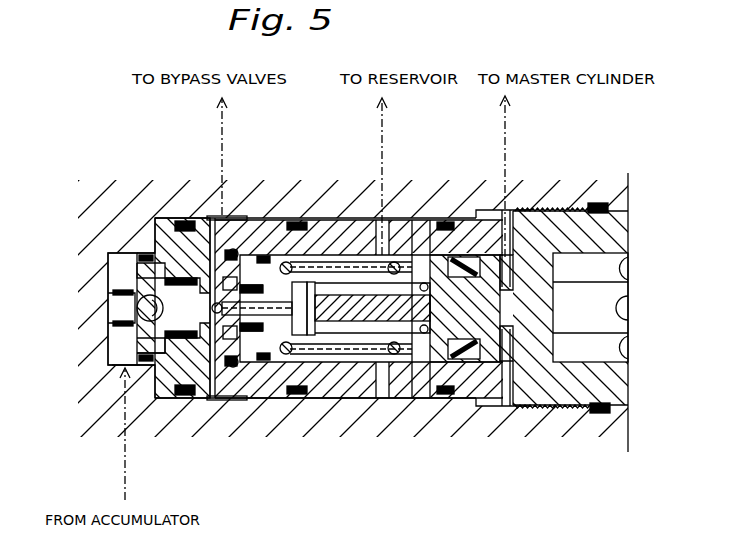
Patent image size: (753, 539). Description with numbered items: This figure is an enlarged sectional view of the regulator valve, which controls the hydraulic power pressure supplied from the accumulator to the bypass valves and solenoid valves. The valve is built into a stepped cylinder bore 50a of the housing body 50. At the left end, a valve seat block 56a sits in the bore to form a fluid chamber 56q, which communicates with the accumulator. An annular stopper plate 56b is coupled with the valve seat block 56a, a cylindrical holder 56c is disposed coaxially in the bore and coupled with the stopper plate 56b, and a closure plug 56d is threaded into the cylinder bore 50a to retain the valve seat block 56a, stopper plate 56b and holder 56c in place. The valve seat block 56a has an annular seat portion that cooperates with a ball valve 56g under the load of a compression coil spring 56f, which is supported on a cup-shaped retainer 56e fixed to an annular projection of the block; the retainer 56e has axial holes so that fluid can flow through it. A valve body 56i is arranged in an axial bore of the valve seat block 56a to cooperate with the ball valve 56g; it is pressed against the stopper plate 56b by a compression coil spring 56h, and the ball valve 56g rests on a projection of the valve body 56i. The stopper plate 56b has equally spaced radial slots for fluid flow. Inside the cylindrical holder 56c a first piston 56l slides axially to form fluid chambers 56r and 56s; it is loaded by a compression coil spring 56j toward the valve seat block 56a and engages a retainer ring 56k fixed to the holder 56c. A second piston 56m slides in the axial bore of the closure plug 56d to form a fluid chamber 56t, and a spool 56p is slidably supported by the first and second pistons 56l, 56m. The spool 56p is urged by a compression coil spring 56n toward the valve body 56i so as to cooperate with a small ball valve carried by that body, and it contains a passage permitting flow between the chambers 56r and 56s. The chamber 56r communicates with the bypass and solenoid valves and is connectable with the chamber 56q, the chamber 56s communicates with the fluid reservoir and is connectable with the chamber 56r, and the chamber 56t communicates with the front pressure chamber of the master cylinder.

The housing body 50 is at (628, 432).
The stepped cylinder bore 50a is at (491, 217).
The valve seat block 56a is at (163, 218).
The stopper plate 56b is at (210, 218).
The cylindrical holder 56c is at (322, 227).
The closure plug 56d is at (558, 217).
The cup-shaped retainer 56e is at (133, 268).
The compression coil spring 56f is at (110, 304).
The ball valve 56g is at (160, 334).
The compression coil spring 56h is at (160, 358).
The valve body 56i is at (150, 368).
The compression coil spring 56j is at (278, 318).
The retainer ring 56k is at (231, 265).
The first piston 56l is at (247, 340).
The second piston 56m is at (472, 340).
The compression coil spring 56n is at (445, 330).
The spool 56p is at (357, 310).
The fluid chamber 56q is at (108, 257).
The fluid chamber 56r is at (228, 252).
The fluid chamber 56s is at (357, 260).
The fluid chamber 56t is at (509, 280).